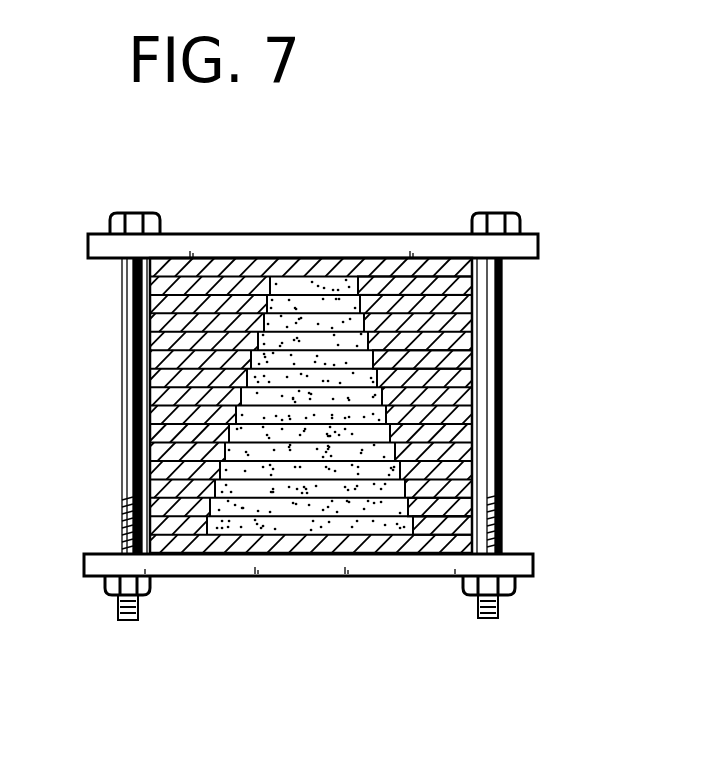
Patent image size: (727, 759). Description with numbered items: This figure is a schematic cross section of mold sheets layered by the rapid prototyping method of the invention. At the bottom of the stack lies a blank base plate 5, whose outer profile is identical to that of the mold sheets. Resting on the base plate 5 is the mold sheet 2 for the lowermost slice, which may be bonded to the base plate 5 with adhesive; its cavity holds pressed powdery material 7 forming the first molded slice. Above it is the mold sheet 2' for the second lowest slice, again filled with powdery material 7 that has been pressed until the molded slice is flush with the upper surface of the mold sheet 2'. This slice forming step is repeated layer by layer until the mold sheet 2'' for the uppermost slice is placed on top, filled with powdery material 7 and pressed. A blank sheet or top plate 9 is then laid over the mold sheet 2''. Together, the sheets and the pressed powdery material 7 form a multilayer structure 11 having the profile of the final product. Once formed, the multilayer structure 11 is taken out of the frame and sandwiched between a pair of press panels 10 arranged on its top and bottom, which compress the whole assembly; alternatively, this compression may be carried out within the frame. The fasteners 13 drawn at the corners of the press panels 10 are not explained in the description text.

The layer 2 is at (506, 531).
The layer 2' is at (499, 478).
The layer 2'' is at (485, 284).
The bottom layer 5 is at (375, 545).
The clamping bolt 7 is at (150, 380).
The stepped core 9 is at (370, 262).
The pressing plate 10 is at (283, 246).
The layer 11 is at (466, 364).
The nut 13 is at (138, 217).